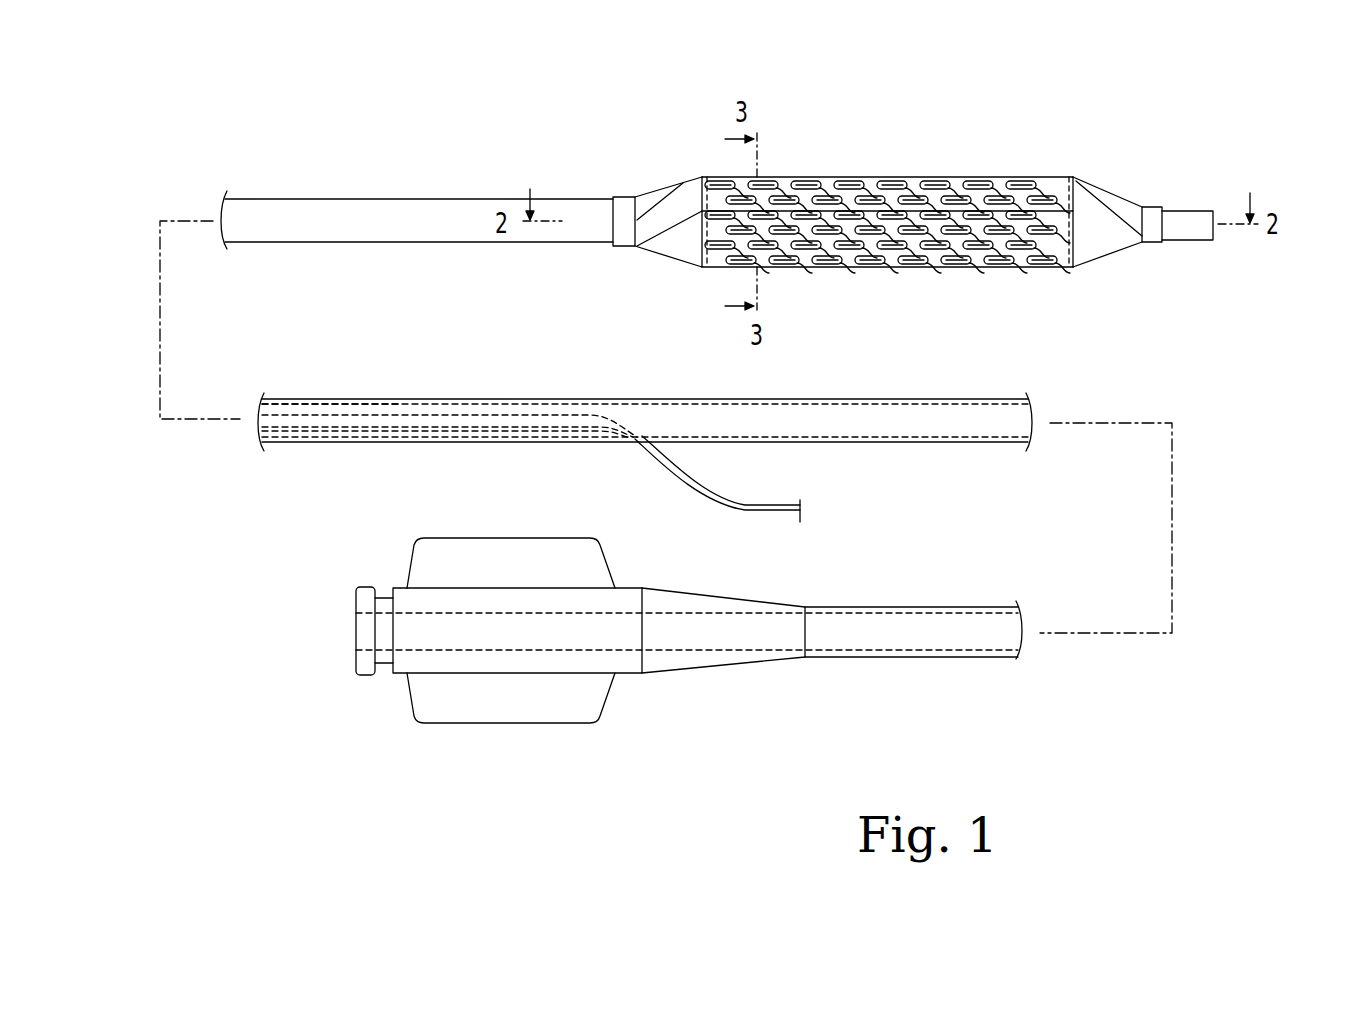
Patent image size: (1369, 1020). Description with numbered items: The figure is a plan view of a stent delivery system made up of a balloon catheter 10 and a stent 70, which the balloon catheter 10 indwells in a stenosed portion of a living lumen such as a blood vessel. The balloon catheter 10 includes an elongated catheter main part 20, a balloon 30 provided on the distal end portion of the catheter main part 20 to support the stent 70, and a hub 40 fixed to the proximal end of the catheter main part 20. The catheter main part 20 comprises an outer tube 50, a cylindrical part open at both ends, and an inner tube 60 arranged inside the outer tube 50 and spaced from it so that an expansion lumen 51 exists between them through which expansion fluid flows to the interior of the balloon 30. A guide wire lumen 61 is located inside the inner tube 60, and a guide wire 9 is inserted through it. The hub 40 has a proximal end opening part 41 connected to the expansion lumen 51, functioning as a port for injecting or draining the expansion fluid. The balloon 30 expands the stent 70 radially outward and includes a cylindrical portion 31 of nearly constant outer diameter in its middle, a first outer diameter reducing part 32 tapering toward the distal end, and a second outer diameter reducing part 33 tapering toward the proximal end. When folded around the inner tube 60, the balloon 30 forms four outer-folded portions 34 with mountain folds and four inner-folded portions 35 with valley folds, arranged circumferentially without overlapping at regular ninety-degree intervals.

The balloon catheter 10 is at (262, 188).
The catheter main part 20 is at (355, 198).
The balloon 30 is at (1135, 53).
The cylindrical portion 31 is at (1068, 94).
The first outer diameter reducing part 32 is at (1138, 94).
The second outer diameter reducing part 33 is at (705, 94).
The outer-folded portion 34 is at (685, 268).
The inner-folded portion 35 is at (706, 230).
The stent 70 is at (1005, 180).
The inner tube 60 is at (1185, 220).
The guide wire lumen 61 is at (472, 412).
The outer tube 50 is at (455, 213).
The expansion lumen 51 is at (975, 408).
The guide wire 9 is at (690, 490).
The hub 40 is at (436, 600).
The proximal end opening part 41 is at (366, 615).